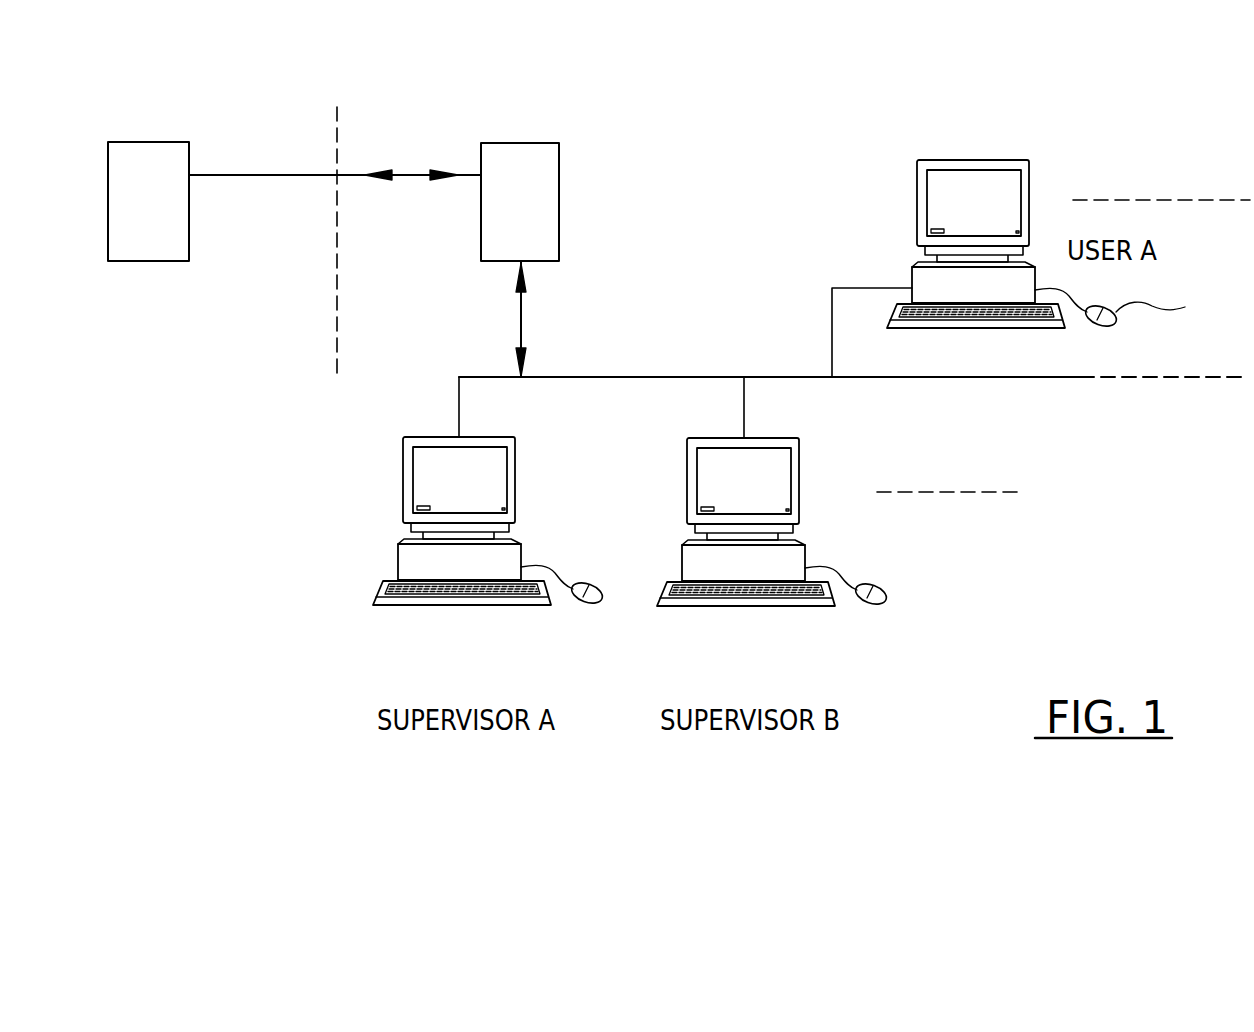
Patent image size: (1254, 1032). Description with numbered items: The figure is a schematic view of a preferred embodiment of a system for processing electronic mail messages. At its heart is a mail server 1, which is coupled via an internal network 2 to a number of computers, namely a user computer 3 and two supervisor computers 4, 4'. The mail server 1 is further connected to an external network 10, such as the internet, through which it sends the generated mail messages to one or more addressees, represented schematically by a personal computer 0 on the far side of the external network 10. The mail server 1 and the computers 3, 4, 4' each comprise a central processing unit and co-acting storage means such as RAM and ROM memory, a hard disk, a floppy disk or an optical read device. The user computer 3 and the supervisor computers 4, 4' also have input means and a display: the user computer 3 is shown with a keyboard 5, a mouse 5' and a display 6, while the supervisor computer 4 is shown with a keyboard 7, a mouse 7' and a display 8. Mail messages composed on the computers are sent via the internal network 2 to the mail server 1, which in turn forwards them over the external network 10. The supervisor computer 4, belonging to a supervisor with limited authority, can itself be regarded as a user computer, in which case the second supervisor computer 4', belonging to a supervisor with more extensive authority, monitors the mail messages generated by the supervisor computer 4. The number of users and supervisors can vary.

The personal computer 0 is at (157, 152).
The external network 10 is at (250, 172).
The mail server 1 is at (527, 153).
The internal network 2 is at (625, 377).
The user computer 3 is at (862, 209).
The display 6 is at (967, 185).
The keyboard 5 is at (985, 337).
The mouse 5' is at (1124, 308).
The supervisor computer 4 is at (427, 561).
The display 8 is at (497, 466).
The keyboard 7 is at (458, 633).
The mouse 7' is at (563, 625).
The second supervisor computer 4' is at (806, 523).